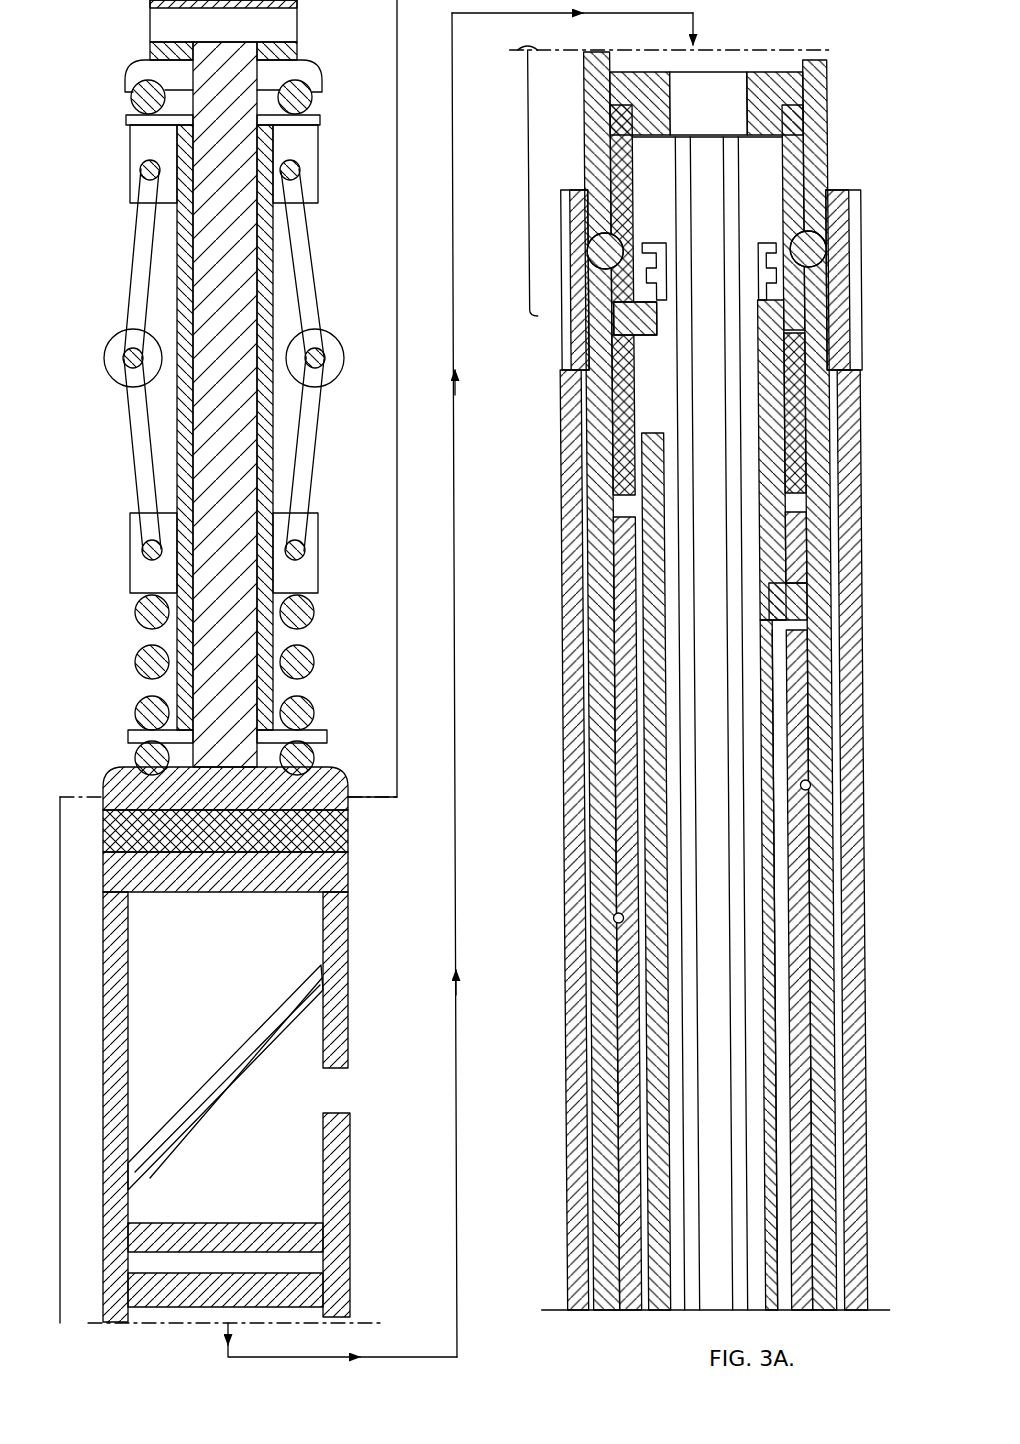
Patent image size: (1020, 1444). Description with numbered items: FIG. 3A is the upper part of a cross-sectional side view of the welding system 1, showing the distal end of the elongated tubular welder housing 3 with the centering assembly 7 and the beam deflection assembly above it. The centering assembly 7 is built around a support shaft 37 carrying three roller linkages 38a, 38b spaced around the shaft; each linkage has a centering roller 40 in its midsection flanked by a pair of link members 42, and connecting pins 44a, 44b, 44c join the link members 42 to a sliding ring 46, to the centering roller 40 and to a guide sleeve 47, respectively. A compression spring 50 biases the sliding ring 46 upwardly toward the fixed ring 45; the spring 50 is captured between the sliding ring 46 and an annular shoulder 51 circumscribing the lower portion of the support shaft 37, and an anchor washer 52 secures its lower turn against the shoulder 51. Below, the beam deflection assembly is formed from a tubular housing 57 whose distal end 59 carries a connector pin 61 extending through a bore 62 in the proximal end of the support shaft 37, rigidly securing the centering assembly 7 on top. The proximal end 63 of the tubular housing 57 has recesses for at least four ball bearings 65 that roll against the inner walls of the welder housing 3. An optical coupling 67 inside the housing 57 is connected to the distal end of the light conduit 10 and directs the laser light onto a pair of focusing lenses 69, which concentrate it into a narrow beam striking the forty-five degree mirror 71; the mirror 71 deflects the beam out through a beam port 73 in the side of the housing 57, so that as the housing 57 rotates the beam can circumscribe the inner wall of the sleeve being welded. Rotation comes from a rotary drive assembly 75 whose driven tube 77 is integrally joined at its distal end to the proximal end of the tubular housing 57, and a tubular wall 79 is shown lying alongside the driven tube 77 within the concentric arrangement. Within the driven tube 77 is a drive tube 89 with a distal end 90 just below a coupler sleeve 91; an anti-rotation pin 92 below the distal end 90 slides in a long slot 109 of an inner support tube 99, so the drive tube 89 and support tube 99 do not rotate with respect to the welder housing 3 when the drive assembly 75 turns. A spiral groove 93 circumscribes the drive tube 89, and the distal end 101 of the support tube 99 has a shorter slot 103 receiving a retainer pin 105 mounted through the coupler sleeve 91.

The welding system 1 is at (460, 685).
The welder housing 3 is at (868, 1135).
The centering assembly 7 is at (397, 338).
The light conduit 10 is at (715, 615).
The support shaft 37 is at (207, 265).
The roller linkage 38a is at (322, 428).
The roller linkage 38b is at (130, 457).
The centering roller 40 is at (330, 342).
The link member 42 is at (307, 262).
The connecting pin 44a is at (298, 168).
The connecting pin 44b is at (325, 360).
The connecting pin 44c is at (304, 550).
The fixed ring 45 is at (142, 147).
The sliding ring 46 is at (142, 557).
The guide sleeve 47 is at (185, 437).
The compression spring 50 is at (138, 660).
The annular shoulder 51 is at (303, 788).
The anchor washer 52 is at (140, 735).
The tubular housing 57 is at (120, 993).
The distal end 59 is at (100, 833).
The connector pin 61 is at (150, 800).
The bore 62 is at (173, 852).
The proximal end 63 is at (818, 133).
The ball bearing 65 is at (607, 245).
The optical coupling 67 is at (728, 87).
The focusing lens 69 is at (243, 1280).
The mirror 71 is at (253, 1033).
The beam port 73 is at (340, 1113).
The rotary drive assembly 75 is at (612, 782).
The driven tube 77 is at (600, 965).
The tube wall 79 is at (598, 463).
The drive tube 89 is at (620, 1018).
The distal end 90 is at (800, 527).
The coupler sleeve 91 is at (795, 415).
The anti-rotation pin 92 is at (790, 615).
The spiral groove 93 is at (805, 787).
The inner support tube 99 is at (650, 738).
The distal end 101 is at (622, 548).
The slot 103 is at (655, 388).
The retainer pin 105 is at (637, 318).
The slot 109 is at (770, 755).